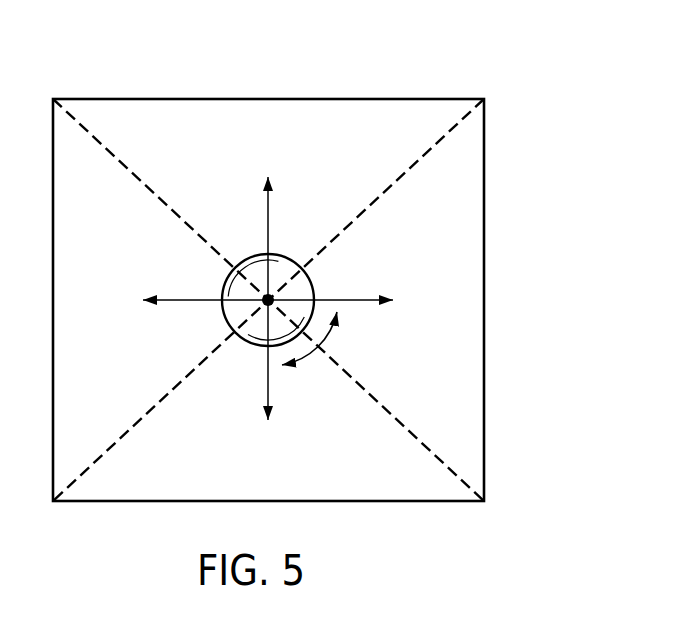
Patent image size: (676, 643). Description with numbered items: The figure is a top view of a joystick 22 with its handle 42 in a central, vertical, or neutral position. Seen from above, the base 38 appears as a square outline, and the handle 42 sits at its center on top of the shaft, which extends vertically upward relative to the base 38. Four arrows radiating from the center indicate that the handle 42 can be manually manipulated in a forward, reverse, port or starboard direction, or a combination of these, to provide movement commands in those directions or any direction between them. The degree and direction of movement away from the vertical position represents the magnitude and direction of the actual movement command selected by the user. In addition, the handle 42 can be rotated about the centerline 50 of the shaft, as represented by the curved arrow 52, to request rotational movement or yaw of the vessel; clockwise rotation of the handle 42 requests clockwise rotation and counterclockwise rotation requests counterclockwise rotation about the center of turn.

The joystick 22 is at (442, 42).
The base 38 is at (484, 183).
The handle 42 is at (312, 282).
The centerline 50 is at (266, 297).
The arrow 52 is at (311, 352).